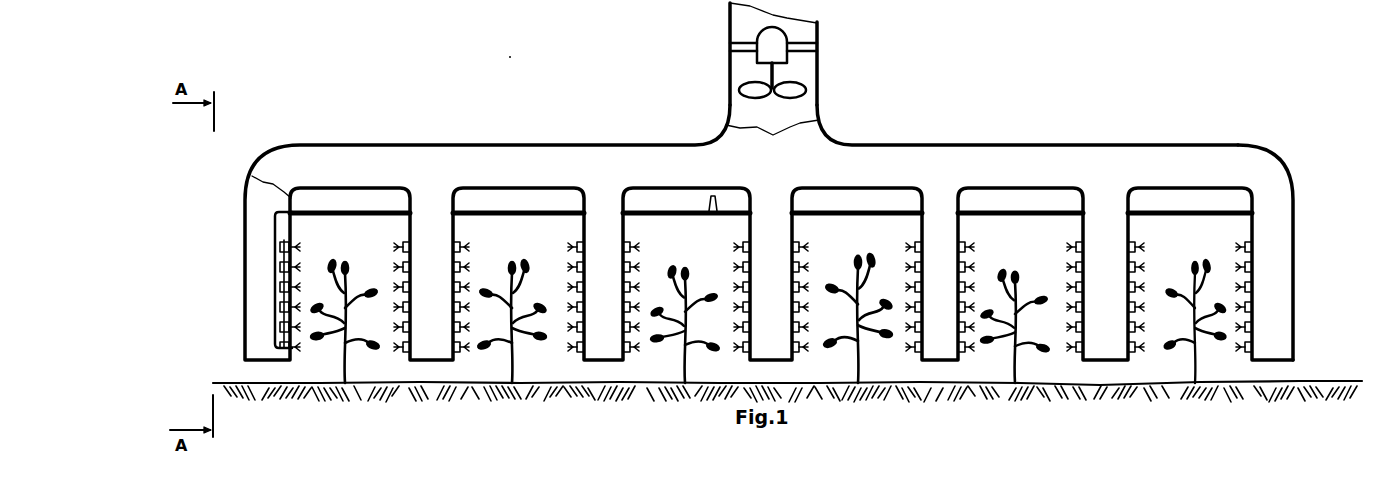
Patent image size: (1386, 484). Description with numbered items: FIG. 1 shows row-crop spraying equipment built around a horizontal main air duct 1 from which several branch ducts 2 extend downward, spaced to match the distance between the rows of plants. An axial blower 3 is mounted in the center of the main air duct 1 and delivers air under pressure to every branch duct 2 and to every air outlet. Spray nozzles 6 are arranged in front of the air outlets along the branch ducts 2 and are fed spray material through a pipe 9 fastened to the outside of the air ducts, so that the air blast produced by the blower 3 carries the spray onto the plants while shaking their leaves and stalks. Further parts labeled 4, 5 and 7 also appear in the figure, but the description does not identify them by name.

The main air duct 1 is at (971, 157).
The branch duct 2 is at (1280, 218).
The axial blower 3 is at (800, 90).
The motor 4 is at (775, 42).
The spray heads 5 is at (1237, 303).
The spray nozzle 6 is at (1233, 265).
The air duct 7 is at (730, 63).
The pipe 9 is at (510, 210).